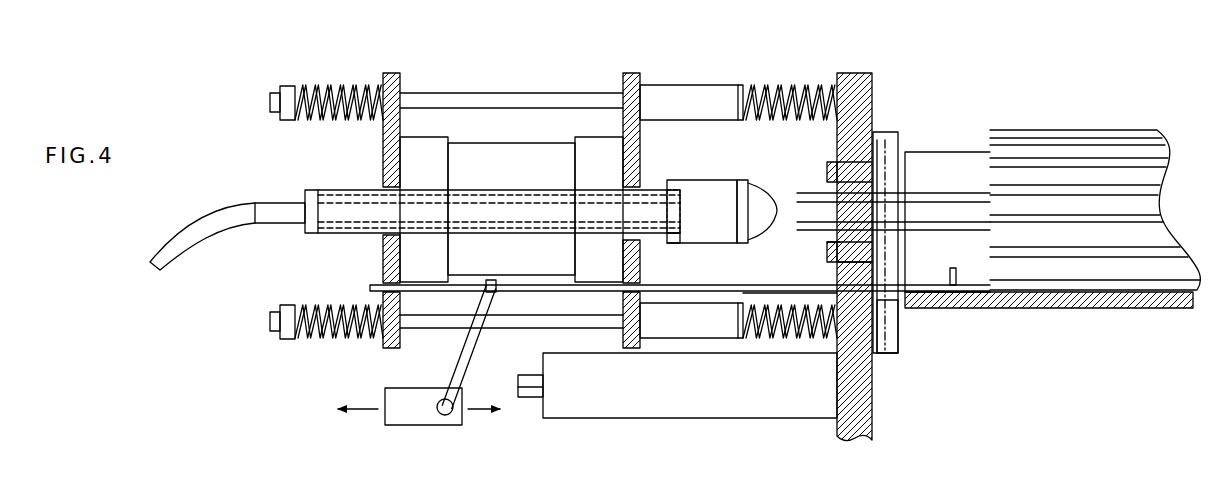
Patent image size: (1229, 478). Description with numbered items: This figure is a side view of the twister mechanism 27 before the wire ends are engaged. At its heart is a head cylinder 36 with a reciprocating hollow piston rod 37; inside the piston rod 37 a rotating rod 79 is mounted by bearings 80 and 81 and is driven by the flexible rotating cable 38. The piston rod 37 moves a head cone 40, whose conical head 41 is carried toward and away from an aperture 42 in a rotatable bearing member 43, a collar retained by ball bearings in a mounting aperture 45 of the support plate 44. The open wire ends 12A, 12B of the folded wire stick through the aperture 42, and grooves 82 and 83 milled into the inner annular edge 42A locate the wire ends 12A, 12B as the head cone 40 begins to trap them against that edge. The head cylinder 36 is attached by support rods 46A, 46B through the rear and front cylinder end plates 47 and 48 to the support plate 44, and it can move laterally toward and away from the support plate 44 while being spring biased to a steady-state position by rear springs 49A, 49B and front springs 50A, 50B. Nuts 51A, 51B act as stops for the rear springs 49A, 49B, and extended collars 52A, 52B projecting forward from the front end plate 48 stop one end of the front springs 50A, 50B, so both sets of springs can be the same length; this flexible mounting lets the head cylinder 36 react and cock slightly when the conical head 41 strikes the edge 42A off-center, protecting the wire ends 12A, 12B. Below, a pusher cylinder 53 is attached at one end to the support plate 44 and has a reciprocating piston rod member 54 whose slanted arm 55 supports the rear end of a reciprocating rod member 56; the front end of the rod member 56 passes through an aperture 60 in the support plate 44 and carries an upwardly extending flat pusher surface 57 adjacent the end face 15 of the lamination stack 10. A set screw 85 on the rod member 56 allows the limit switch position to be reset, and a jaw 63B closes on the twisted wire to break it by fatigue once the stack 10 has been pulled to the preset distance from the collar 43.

The lamination stack 10 is at (1112, 128).
The end face 15 is at (980, 150).
The wire end 12A is at (920, 224).
The wire end 12B is at (885, 195).
The twister mechanism 27 is at (452, 93).
The head cylinder 36 is at (487, 142).
The piston rod 37 is at (650, 188).
The flexible rotating cable 38 is at (200, 213).
The head cone 40 is at (763, 185).
The conical head 41 is at (752, 182).
The aperture 42 is at (870, 250).
The inner annular edge 42A is at (827, 250).
The rotatable bearing member 43 is at (850, 170).
The support plate 44 is at (857, 412).
The mounting aperture 45 is at (856, 108).
The support rod 46A is at (618, 93).
The support rod 46B is at (540, 325).
The rear cylinder end plate 47 is at (400, 78).
The front cylinder end plate 48 is at (640, 78).
The rear spring 49A is at (345, 87).
The rear spring 49B is at (318, 338).
The front spring 50A is at (786, 96).
The front spring 50B is at (752, 340).
The nut 51A is at (270, 103).
The nut 51B is at (270, 322).
The extended collar 52A is at (705, 86).
The extended collar 52B is at (656, 340).
The pusher cylinder 53 is at (590, 420).
The reciprocating piston rod member 54 is at (530, 398).
The slanted arm 55 is at (517, 342).
The reciprocating rod member 56 is at (682, 290).
The flat pusher surface 57 is at (958, 283).
The aperture 60 is at (820, 294).
The jaw 63B is at (888, 343).
The rotating rod 79 is at (282, 203).
The bearing 80 is at (315, 224).
The bearing 81 is at (668, 242).
The groove 82 is at (827, 172).
The groove 83 is at (830, 245).
The set screw 85 is at (508, 282).